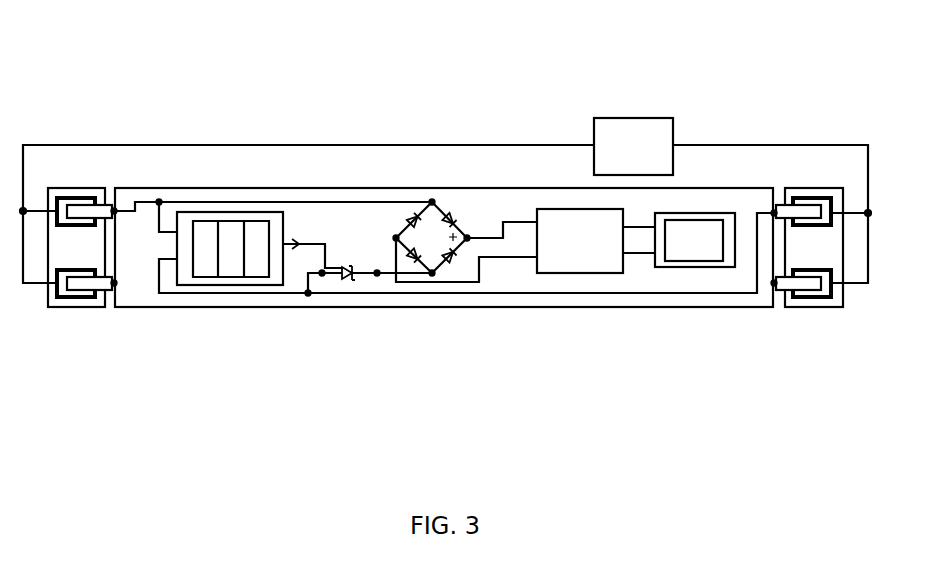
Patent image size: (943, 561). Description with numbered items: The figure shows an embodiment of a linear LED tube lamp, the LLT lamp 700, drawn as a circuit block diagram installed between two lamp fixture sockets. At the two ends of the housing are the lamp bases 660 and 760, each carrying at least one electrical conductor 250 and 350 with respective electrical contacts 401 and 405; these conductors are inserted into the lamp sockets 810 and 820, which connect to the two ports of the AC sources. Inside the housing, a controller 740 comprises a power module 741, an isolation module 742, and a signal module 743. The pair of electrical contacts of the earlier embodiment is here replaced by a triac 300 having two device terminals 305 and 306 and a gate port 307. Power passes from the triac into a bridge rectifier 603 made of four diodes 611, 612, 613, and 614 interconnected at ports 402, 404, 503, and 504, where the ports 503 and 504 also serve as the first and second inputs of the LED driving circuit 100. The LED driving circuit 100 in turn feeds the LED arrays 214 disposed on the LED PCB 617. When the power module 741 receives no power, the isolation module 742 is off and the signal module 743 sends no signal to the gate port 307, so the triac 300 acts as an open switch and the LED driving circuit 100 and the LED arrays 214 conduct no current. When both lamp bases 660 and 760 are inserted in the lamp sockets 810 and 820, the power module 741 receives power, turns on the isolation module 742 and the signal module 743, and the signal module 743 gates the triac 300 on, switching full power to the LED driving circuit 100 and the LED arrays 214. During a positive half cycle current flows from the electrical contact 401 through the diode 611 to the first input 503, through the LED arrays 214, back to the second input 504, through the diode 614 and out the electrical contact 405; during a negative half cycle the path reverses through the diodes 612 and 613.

The LED driving circuit 100 is at (571, 274).
The LED arrays 214 is at (677, 262).
The electrical conductor 250 is at (75, 208).
The triac 300 is at (349, 283).
The device terminal 305 is at (320, 277).
The device terminal 306 is at (377, 271).
The gate port 307 is at (315, 242).
The electrical conductor 350 is at (813, 215).
The electrical contact 401 is at (112, 206).
The port 402 is at (432, 201).
The port 404 is at (432, 275).
The electrical contact 405 is at (778, 211).
The first input 503 is at (469, 240).
The second input 504 is at (395, 241).
The bridge rectifier 603 is at (445, 284).
The diode 611 is at (446, 213).
The diode 612 is at (453, 262).
The diode 613 is at (408, 213).
The diode 614 is at (410, 258).
The LED PCB 617 is at (685, 212).
The lamp base 660 is at (137, 184).
The LLT lamp 700 is at (522, 184).
The controller 740 is at (205, 288).
The power module 741 is at (205, 222).
The isolation module 742 is at (232, 272).
The signal module 743 is at (257, 222).
The lamp base 760 is at (764, 184).
The lamp socket 810 is at (98, 310).
The lamp socket 820 is at (800, 310).